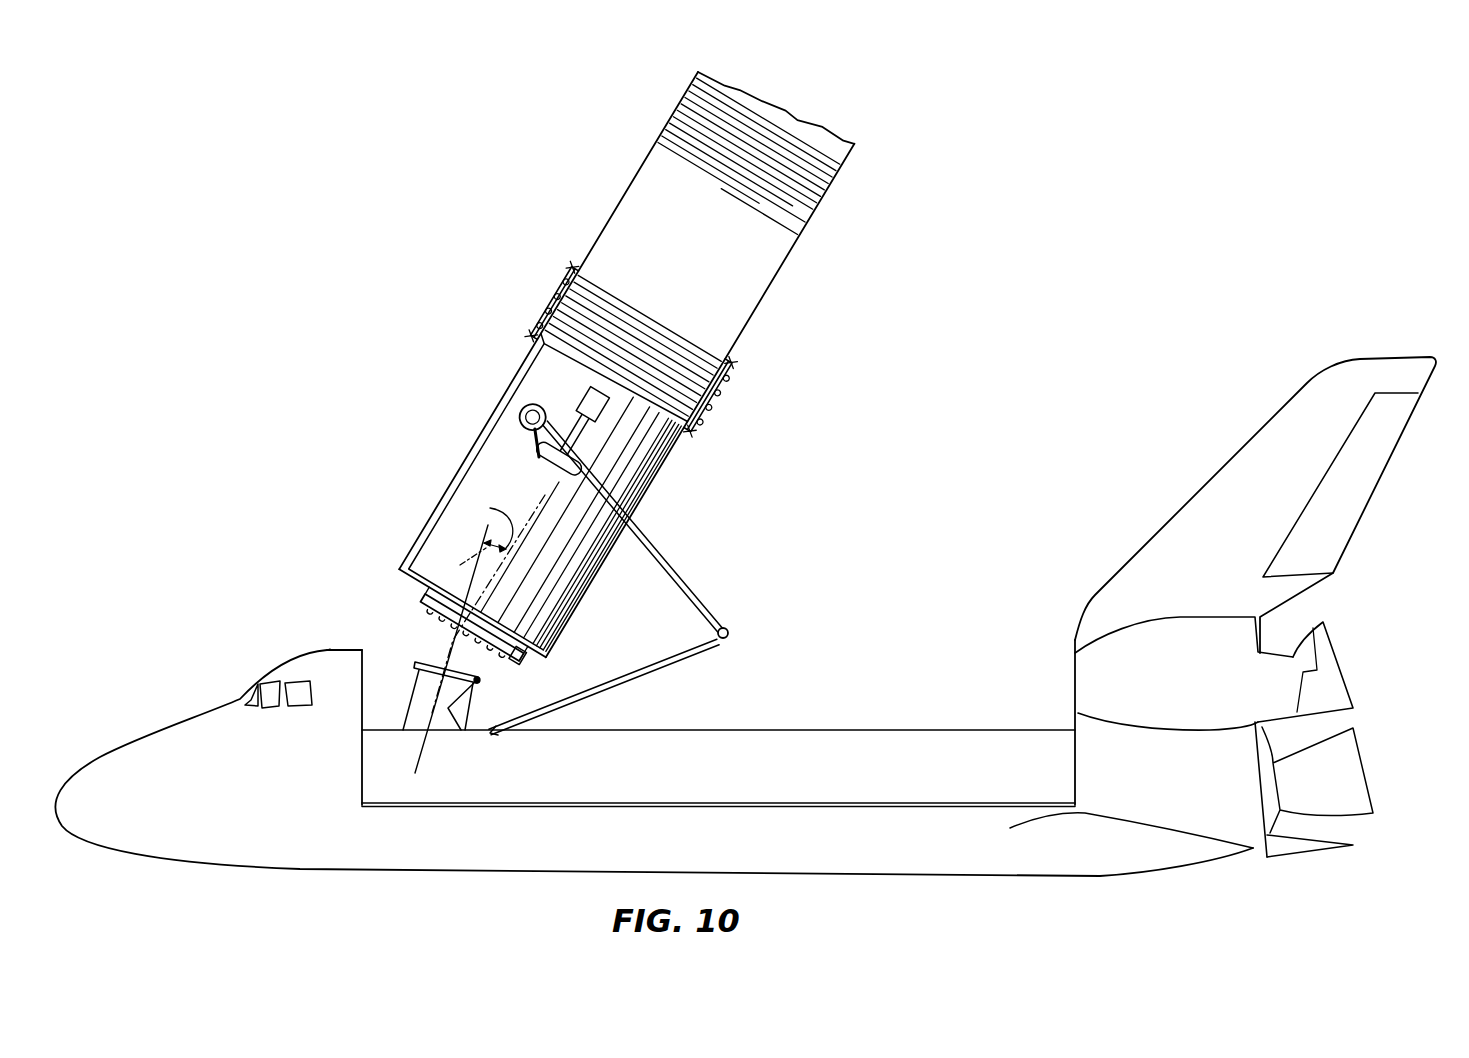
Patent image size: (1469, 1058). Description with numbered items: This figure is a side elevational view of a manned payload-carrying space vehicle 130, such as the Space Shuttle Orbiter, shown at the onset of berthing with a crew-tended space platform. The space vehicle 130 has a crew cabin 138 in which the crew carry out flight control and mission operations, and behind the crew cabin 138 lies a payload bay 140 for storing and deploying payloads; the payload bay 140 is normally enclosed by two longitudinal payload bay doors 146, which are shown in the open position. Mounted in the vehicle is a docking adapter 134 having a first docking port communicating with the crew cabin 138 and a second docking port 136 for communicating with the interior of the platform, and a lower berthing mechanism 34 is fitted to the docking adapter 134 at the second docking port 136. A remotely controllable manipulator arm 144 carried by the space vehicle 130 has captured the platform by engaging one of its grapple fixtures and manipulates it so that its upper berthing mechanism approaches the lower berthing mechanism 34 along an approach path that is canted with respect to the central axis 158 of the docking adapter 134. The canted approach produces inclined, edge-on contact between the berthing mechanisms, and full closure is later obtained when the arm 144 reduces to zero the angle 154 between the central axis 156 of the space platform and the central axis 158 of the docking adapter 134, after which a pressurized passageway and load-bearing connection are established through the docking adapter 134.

The central axis of the space platform 156 is at (532, 500).
The angle 154 is at (464, 632).
The central axis of the docking adapter 158 is at (475, 568).
The remote manipulator arm 144 is at (697, 597).
The lower berthing mechanism 34 is at (480, 681).
The docking adapter 134 is at (417, 693).
The second docking port 136 is at (493, 735).
The crew cabin 138 is at (328, 650).
The payload bay 140 is at (842, 727).
The payload bay doors 146 is at (818, 793).
The space vehicle 130 is at (306, 855).